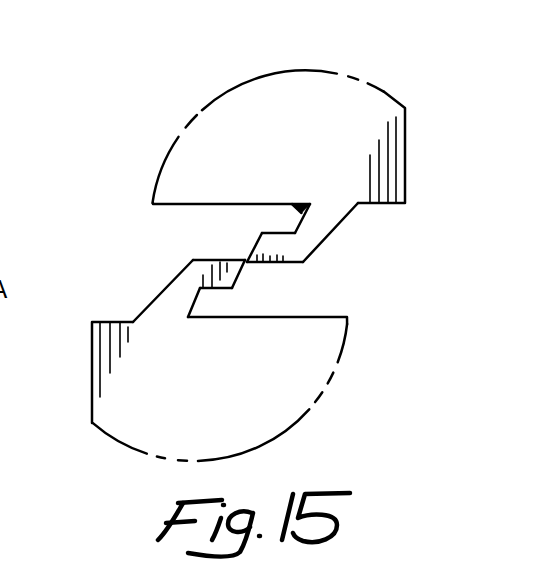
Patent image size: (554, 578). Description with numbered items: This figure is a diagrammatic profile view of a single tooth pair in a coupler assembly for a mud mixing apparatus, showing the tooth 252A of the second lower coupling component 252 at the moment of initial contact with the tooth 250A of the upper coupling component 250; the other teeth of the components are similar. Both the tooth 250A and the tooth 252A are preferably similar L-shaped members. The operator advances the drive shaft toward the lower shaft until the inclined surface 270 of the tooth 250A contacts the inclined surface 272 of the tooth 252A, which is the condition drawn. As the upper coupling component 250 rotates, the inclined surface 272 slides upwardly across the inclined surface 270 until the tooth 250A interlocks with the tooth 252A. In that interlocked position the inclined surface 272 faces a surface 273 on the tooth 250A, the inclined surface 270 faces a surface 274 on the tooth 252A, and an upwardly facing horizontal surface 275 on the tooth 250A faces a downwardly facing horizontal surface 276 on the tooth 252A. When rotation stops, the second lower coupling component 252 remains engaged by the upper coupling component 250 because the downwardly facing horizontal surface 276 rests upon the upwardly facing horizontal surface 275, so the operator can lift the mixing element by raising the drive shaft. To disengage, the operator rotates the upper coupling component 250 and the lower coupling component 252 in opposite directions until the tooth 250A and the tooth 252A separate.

The upper coupling component 250 is at (153, 195).
The tooth of the upper coupling component 250A is at (330, 235).
The second lower coupling component 252 is at (93, 322).
The tooth of the second lower coupling component 252A is at (193, 260).
The inclined surface 270 is at (256, 251).
The inclined surface 272 is at (246, 270).
The surface 273 is at (290, 203).
The surface 274 is at (196, 306).
The upwardly facing horizontal surface 275 is at (282, 231).
The downwardly facing horizontal surface 276 is at (219, 289).